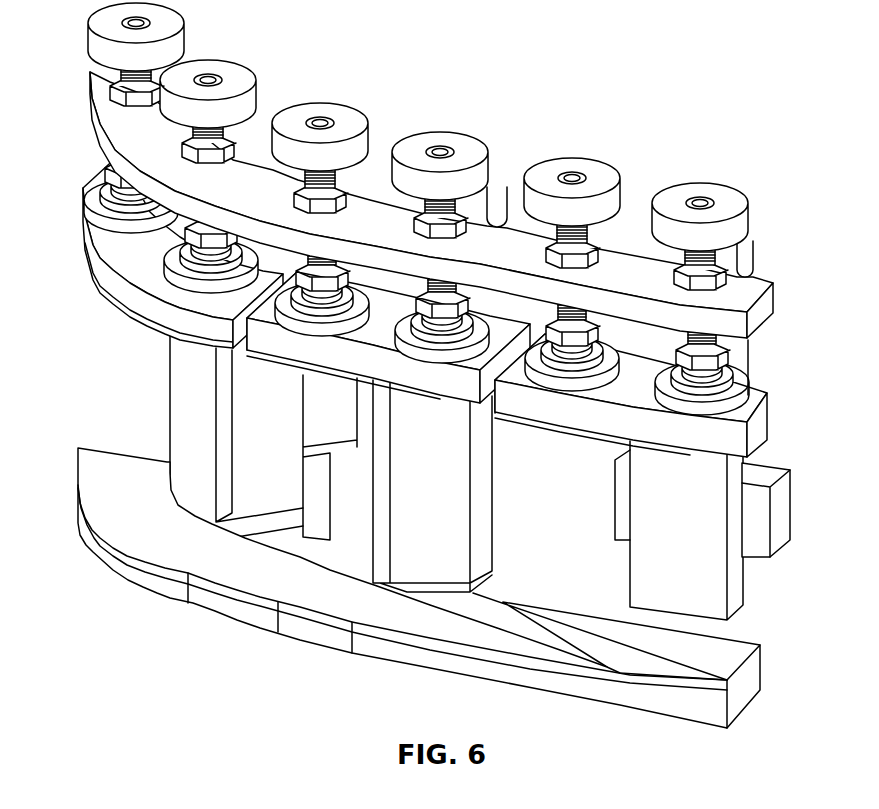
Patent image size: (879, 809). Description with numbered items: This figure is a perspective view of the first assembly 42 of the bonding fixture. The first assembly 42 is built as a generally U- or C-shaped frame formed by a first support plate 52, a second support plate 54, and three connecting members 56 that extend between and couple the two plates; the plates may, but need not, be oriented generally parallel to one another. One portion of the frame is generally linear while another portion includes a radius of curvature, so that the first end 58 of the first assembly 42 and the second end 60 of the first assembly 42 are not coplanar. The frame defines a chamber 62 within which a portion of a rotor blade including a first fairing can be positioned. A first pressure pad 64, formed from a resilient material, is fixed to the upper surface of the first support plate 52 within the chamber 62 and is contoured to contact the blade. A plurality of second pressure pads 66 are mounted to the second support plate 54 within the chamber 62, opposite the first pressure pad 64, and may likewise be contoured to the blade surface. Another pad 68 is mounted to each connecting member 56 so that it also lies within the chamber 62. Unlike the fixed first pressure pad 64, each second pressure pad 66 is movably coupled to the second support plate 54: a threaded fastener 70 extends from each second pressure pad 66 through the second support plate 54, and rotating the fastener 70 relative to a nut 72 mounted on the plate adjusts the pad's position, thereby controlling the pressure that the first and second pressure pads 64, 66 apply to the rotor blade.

The first assembly 42 is at (433, 365).
The first support plate 52 is at (235, 612).
The second support plate 54 is at (461, 233).
The connecting member 56 is at (260, 442).
The first end 58 is at (735, 325).
The second end 60 is at (92, 72).
The chamber 62 is at (406, 301).
The first pressure pad 64 is at (100, 503).
The second pressure pad 66 is at (113, 268).
The pad 68 is at (182, 430).
The threaded fastener 70 is at (442, 152).
The nut 72 is at (328, 213).